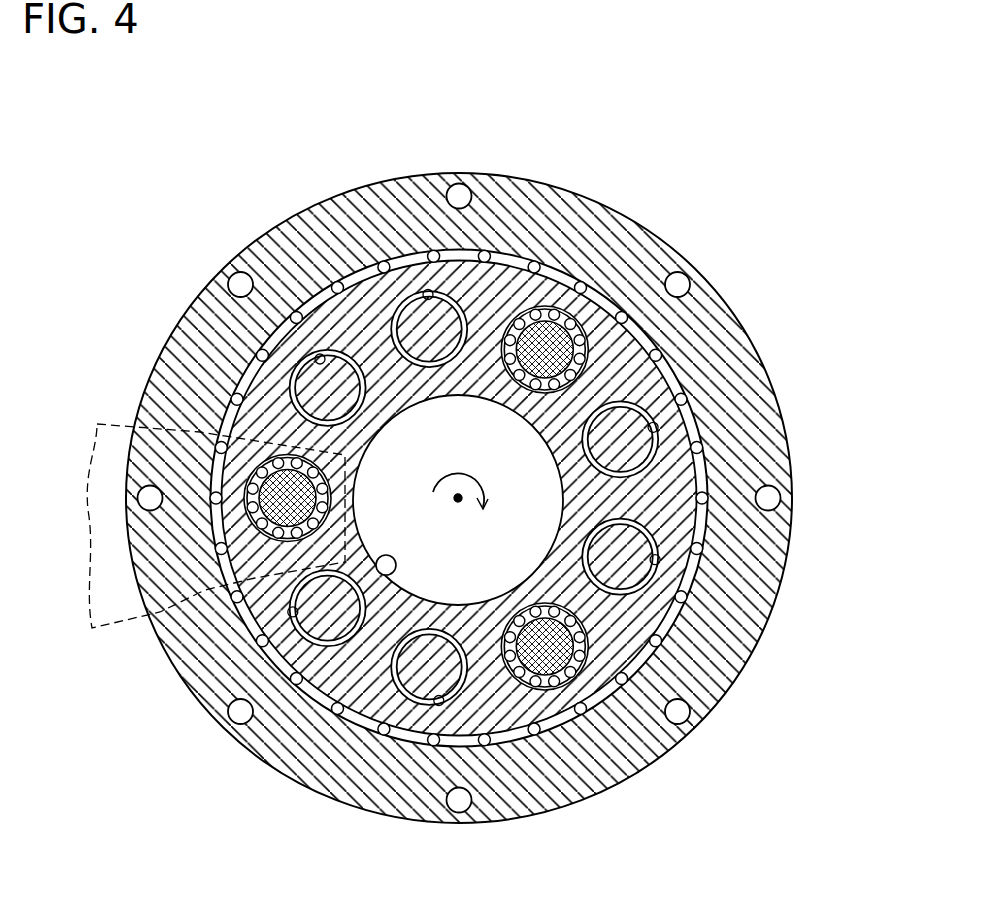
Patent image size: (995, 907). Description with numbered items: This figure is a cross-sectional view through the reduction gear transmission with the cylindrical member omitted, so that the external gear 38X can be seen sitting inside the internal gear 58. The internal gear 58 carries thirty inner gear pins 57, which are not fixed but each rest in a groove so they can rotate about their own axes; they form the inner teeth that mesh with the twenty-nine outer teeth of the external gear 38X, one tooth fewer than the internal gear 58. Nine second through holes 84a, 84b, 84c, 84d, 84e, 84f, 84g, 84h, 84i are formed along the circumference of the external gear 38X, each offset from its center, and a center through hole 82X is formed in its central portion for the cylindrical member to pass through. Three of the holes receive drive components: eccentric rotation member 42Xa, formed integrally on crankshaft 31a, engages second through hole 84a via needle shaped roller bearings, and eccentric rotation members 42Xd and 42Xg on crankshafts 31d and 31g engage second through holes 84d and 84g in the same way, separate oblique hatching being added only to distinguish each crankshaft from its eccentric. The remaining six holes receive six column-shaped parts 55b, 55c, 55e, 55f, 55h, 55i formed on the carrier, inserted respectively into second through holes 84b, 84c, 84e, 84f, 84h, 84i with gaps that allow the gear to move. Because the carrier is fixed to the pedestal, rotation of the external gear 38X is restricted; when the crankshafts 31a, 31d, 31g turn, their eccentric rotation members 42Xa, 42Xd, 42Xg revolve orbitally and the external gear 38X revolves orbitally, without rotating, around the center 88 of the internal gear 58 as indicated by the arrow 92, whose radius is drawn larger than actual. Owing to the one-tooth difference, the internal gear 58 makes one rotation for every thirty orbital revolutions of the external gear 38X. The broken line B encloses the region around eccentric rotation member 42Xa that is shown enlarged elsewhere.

The internal gear 58 is at (697, 330).
The inner gear pins 57 is at (248, 516).
The center through hole 82X is at (345, 697).
The external gear 38X is at (280, 437).
The second through hole 84a is at (258, 523).
The second through hole 84b is at (315, 645).
The second through hole 84c is at (443, 703).
The second through hole 84d is at (586, 666).
The second through hole 84e is at (622, 563).
The second through hole 84f is at (660, 427).
The second through hole 84g is at (552, 315).
The second through hole 84h is at (413, 300).
The second through hole 84i is at (320, 388).
The eccentric rotation member 42Xa is at (250, 475).
The eccentric rotation member 42Xd is at (545, 688).
The eccentric rotation member 42Xg is at (537, 312).
The crankshaft 31a is at (262, 498).
The crankshaft 31d is at (572, 632).
The crankshaft 31g is at (565, 330).
The column-shaped part 55b is at (300, 606).
The column-shaped part 55c is at (425, 672).
The column-shaped part 55e is at (660, 562).
The column-shaped part 55f is at (662, 440).
The column-shaped part 55h is at (418, 325).
The column-shaped part 55i is at (314, 360).
The center of the internal gear 88 is at (456, 503).
The arrow 92 is at (470, 474).
The broken line B is at (97, 424).